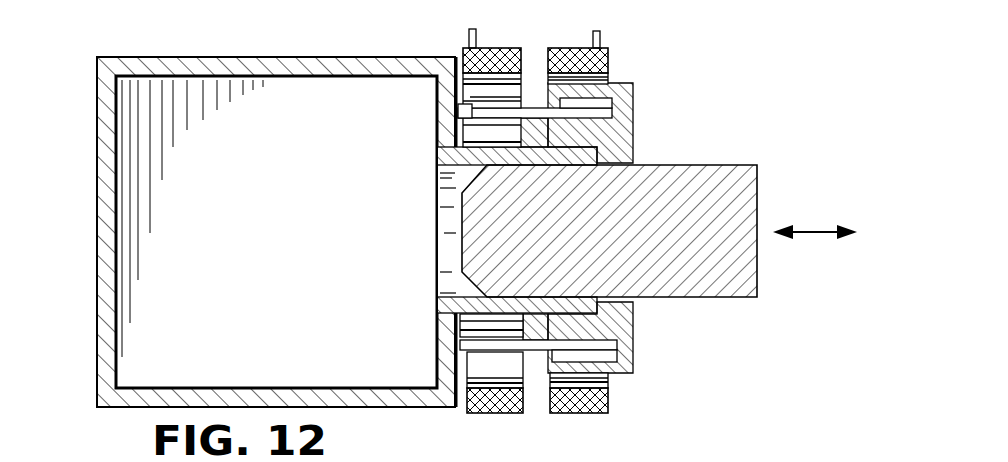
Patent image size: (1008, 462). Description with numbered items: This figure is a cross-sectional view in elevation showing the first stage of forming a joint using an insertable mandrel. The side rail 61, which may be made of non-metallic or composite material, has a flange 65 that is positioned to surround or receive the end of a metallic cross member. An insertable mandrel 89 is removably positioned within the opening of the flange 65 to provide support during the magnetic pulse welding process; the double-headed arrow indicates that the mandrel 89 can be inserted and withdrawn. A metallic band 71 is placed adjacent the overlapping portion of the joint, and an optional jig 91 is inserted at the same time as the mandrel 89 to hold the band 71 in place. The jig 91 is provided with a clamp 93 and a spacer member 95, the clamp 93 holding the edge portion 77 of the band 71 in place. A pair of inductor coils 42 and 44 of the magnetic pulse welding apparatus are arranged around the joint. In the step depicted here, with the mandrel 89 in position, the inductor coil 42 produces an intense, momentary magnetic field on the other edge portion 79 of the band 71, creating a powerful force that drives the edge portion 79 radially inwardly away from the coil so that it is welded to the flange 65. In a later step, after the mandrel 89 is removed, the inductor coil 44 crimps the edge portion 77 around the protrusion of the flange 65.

The side rail 61 is at (95, 233).
The inductor coil 42 is at (468, 60).
The inductor coil 44 is at (596, 58).
The flange 65 is at (610, 377).
The metallic band 71 is at (509, 355).
The edge portion of the band 77 is at (608, 108).
The edge portion of the band 79 is at (470, 112).
The insertable mandrel 89 is at (731, 286).
The jig 91 is at (640, 334).
The clamp 93 is at (582, 92).
The spacer member 95 is at (548, 135).